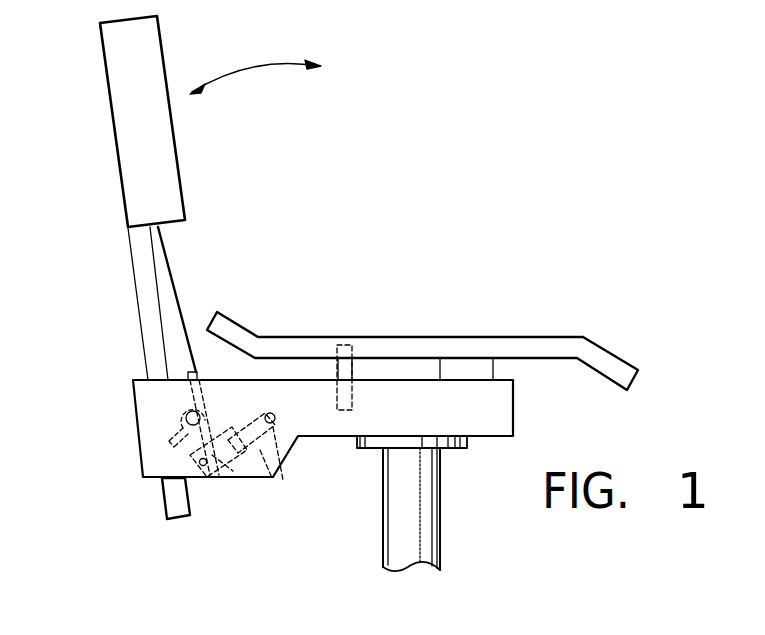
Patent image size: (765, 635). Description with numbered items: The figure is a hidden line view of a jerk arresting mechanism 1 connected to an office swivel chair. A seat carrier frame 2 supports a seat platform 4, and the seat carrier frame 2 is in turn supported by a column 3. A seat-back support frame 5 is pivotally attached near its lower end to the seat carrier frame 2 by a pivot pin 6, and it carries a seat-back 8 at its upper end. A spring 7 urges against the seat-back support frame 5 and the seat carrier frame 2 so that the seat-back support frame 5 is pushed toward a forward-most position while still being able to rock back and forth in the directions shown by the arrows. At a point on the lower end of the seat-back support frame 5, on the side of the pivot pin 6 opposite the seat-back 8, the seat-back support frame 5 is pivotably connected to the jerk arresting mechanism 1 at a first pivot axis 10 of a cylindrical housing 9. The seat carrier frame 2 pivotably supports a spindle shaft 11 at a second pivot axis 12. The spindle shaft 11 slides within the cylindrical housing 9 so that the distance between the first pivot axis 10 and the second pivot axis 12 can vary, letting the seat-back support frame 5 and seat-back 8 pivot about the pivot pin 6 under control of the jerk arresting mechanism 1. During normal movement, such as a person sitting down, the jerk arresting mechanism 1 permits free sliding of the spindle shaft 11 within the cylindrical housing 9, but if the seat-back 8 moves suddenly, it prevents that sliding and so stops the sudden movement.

The jerk arresting mechanism 1 is at (208, 480).
The seat carrier frame 2 is at (338, 437).
The column 3 is at (440, 520).
The seat platform 4 is at (510, 340).
The seat-back support frame 5 is at (140, 318).
The pivot pin 6 is at (180, 430).
The spring 7 is at (185, 381).
The seat-back 8 is at (127, 138).
The cylindrical housing 9 is at (233, 458).
The first pivot axis 10 is at (199, 464).
The spindle shaft 11 is at (279, 482).
The second pivot axis 12 is at (287, 445).